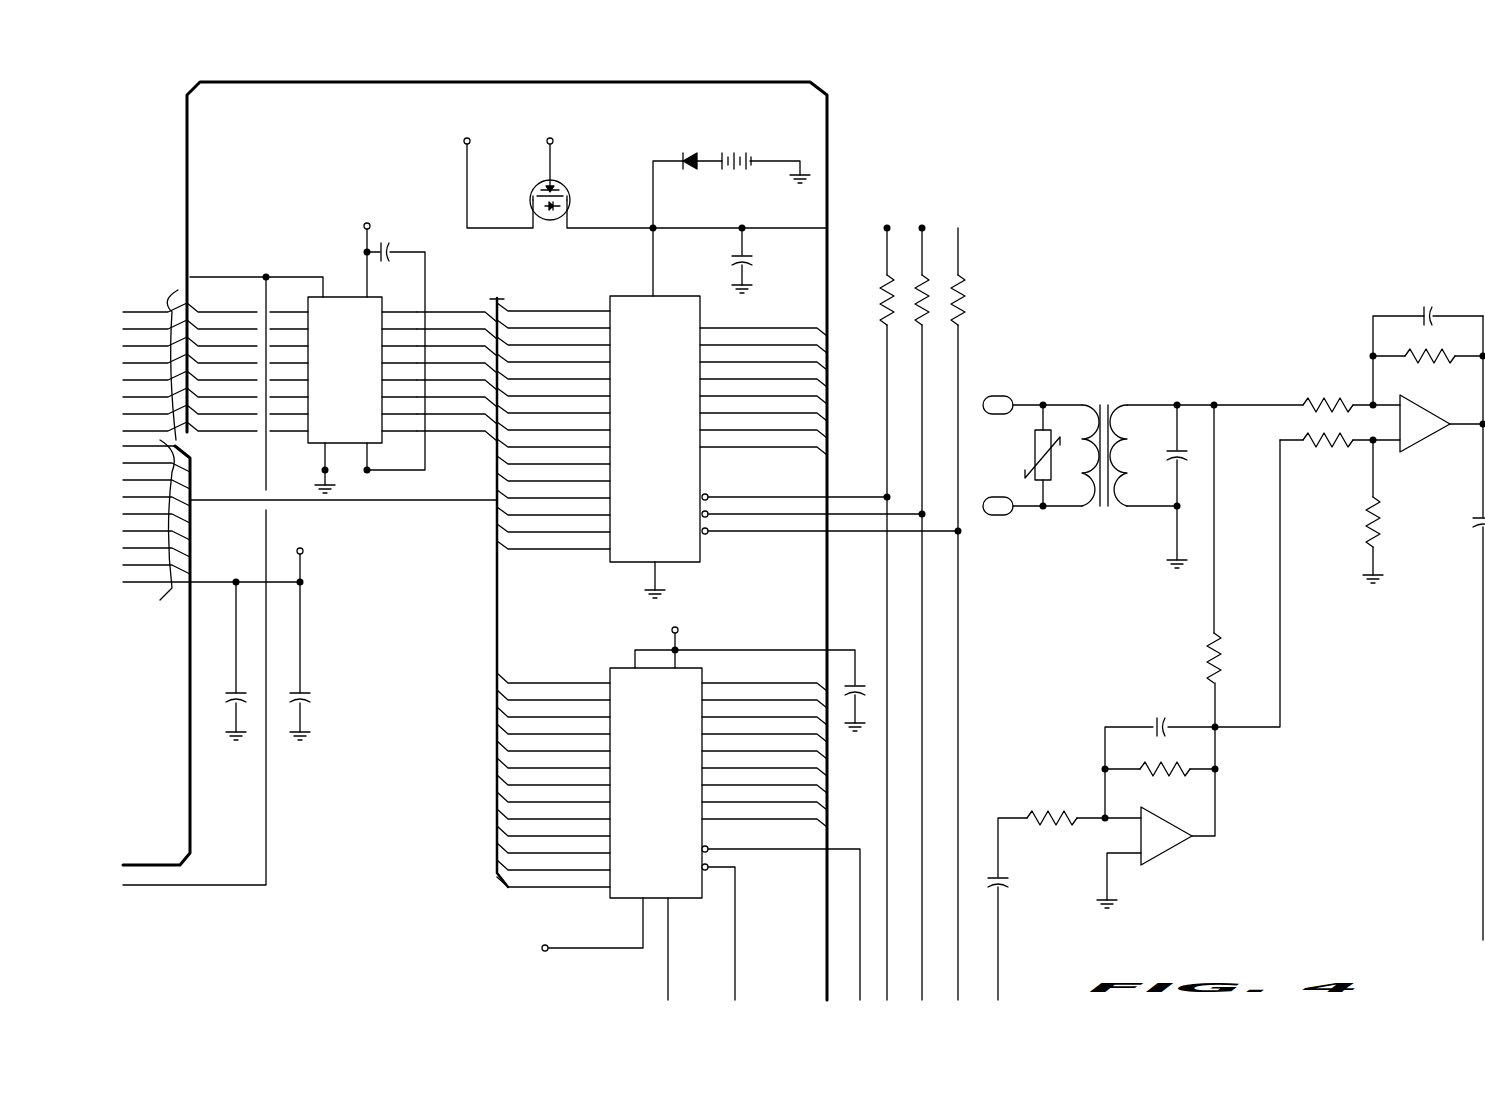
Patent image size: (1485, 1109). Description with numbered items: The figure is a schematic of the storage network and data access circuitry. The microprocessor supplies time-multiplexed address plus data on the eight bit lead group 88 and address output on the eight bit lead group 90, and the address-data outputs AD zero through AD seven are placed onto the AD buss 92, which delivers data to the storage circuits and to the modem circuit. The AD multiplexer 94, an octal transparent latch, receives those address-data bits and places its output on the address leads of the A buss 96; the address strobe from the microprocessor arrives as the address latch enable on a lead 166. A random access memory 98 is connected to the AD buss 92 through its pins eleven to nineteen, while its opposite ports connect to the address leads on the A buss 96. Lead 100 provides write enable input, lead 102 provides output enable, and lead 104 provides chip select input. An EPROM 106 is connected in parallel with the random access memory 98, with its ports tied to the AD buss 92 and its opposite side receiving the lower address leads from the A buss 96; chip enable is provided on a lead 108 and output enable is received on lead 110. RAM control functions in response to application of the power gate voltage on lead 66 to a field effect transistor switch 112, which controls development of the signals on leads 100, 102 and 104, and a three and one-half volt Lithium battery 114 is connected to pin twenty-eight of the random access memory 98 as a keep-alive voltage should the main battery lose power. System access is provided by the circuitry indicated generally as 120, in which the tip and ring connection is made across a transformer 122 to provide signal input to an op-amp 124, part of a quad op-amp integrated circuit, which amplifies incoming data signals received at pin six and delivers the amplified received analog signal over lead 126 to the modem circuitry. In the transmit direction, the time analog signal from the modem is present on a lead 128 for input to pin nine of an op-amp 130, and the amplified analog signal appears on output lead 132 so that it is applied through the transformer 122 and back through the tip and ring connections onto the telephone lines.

The power gate voltage lead 66 is at (553, 152).
The 8 bit lead group 88 is at (177, 292).
The 8 bit lead group 90 is at (193, 523).
The AD buss 92 is at (189, 186).
The AD multiplexer 94 is at (352, 292).
The A buss 96 is at (496, 474).
The random access memory 98 is at (682, 306).
The lead 100 is at (765, 498).
The lead 102 is at (805, 517).
The lead 104 is at (746, 530).
The EPROM 106 is at (656, 667).
The lead 108 is at (737, 971).
The lead 110 is at (808, 834).
The field effect transistor switch 112 is at (570, 193).
The Lithium battery 114 is at (738, 151).
The system access circuitry 120 is at (1300, 362).
The transformer 122 is at (1103, 409).
The op-amp 124 is at (1421, 443).
The lead 126 is at (1483, 931).
The lead 128 is at (1003, 947).
The op-amp 130 is at (1170, 856).
The output lead 132 is at (1214, 602).
The lead 166 is at (215, 272).